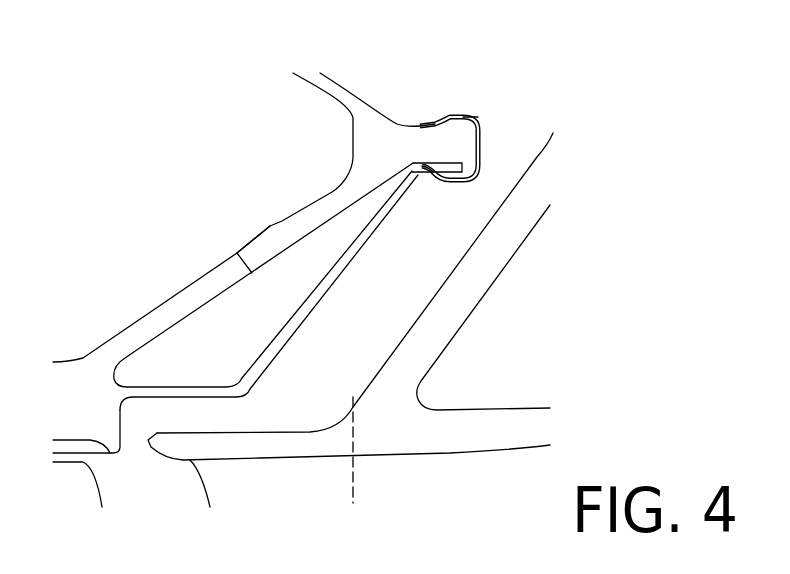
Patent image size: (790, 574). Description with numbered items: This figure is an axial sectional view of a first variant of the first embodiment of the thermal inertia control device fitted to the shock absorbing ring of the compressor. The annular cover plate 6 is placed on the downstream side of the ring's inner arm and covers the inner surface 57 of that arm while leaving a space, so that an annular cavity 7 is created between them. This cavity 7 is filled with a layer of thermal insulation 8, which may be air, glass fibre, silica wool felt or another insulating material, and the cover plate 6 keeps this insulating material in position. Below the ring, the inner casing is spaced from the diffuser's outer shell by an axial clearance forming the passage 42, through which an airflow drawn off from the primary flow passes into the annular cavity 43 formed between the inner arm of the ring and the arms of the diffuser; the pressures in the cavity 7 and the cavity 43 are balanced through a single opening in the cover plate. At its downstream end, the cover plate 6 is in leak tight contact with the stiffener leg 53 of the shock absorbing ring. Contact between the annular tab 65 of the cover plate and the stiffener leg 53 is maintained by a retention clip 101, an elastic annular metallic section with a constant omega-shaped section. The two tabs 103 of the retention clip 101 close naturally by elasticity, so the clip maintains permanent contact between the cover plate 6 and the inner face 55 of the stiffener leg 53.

The annular cover plate 6 is at (315, 297).
The annular cavity 7 is at (203, 348).
The thermal insulation layer 8 is at (163, 349).
The passage 42 is at (133, 442).
The annular cavity 43 is at (373, 352).
The stiffener leg 53 is at (450, 140).
The inner face of the stiffener 55 is at (462, 181).
The inner surface of the inner arm 57 is at (311, 227).
The downstream end 65 is at (420, 161).
The retention clip 101 is at (478, 112).
The tabs of the retention clip 103 is at (429, 120).